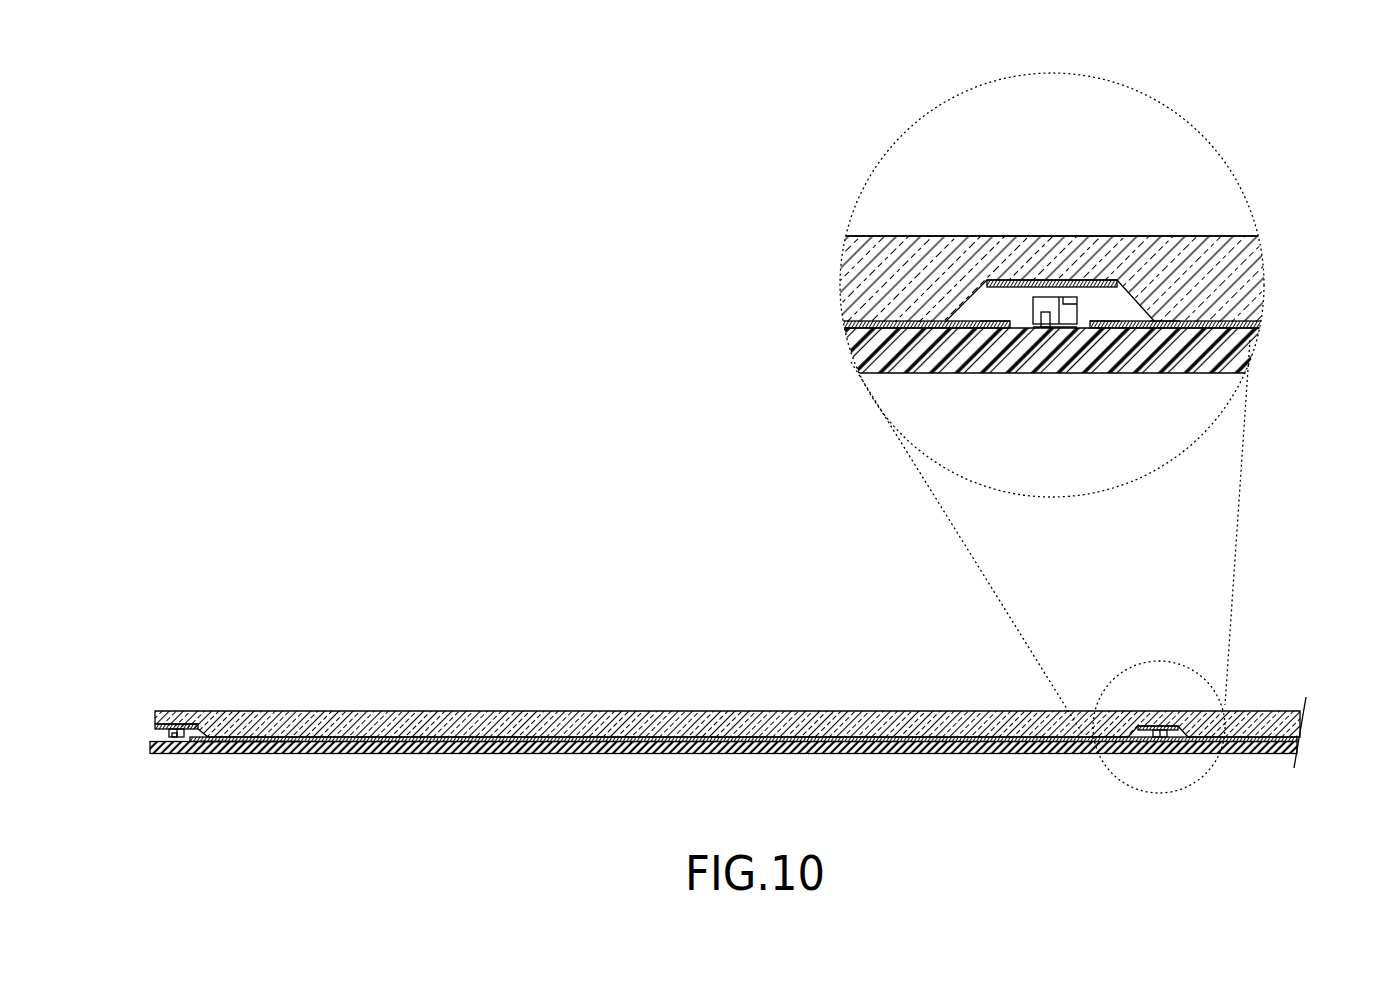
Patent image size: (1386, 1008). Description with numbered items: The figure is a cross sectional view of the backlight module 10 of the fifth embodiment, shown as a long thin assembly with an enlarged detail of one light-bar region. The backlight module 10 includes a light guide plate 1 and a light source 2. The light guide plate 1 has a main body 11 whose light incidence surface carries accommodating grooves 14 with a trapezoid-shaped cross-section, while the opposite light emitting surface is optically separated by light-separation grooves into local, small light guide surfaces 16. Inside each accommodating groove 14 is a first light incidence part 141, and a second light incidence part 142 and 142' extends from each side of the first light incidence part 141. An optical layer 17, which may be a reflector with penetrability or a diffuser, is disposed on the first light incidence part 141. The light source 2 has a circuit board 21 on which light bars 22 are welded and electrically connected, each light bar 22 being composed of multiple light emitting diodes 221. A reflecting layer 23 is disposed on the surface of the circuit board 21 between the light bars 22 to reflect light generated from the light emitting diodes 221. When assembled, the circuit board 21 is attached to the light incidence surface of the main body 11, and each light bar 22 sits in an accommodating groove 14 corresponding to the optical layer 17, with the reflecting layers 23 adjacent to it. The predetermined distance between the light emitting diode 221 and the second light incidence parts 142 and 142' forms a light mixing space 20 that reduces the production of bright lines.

The backlight module 10 is at (581, 99).
The light guide plate 1 is at (874, 228).
The light source 2 is at (896, 384).
The main body 11 is at (1233, 276).
The accommodating groove 14 is at (1103, 309).
The light guide surface 16 is at (1212, 236).
The optical layer 17 is at (1044, 280).
The light mixing space 20 is at (986, 298).
The circuit board 21 is at (1193, 353).
The light bar 22 is at (1025, 317).
The reflecting layer 23 is at (1239, 320).
The first light incidence part 141 is at (1060, 280).
The second light incidence part 142 is at (973, 374).
The second light incidence part 142' is at (1156, 374).
The light emitting diode 221 is at (1044, 322).